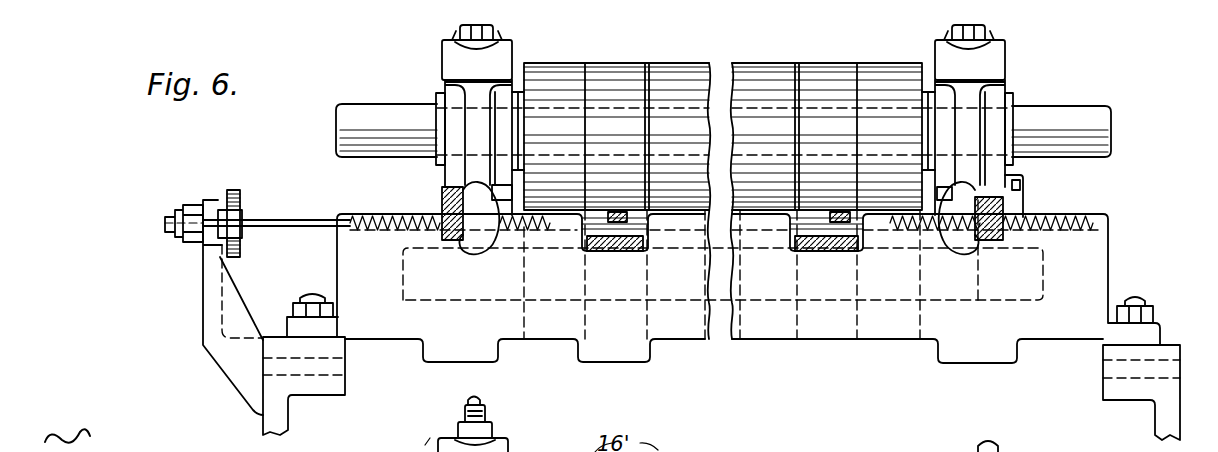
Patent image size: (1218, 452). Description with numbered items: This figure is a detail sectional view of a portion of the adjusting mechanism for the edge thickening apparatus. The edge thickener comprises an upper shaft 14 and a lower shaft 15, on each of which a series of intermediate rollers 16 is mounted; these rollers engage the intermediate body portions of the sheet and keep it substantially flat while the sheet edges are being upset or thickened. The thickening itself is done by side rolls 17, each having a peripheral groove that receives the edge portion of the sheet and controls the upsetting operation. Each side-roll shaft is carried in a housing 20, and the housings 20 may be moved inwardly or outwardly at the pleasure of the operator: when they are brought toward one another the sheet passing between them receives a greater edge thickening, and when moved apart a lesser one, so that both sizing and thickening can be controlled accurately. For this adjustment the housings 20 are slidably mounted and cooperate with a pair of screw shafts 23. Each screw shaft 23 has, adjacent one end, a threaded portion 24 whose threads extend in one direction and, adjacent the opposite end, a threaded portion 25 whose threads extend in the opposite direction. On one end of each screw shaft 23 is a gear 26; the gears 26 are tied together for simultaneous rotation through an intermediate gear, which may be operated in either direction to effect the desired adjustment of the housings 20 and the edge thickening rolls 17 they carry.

The upper shaft 14 is at (374, 112).
The lower shaft 15 is at (445, 297).
The intermediate rollers 16 is at (612, 63).
The side rolls 17 is at (498, 188).
The housing 20 is at (456, 62).
The screw shaft 23 is at (289, 221).
The threaded portion 24 is at (1043, 223).
The threaded portion 25 is at (383, 230).
The gear 26 is at (242, 197).